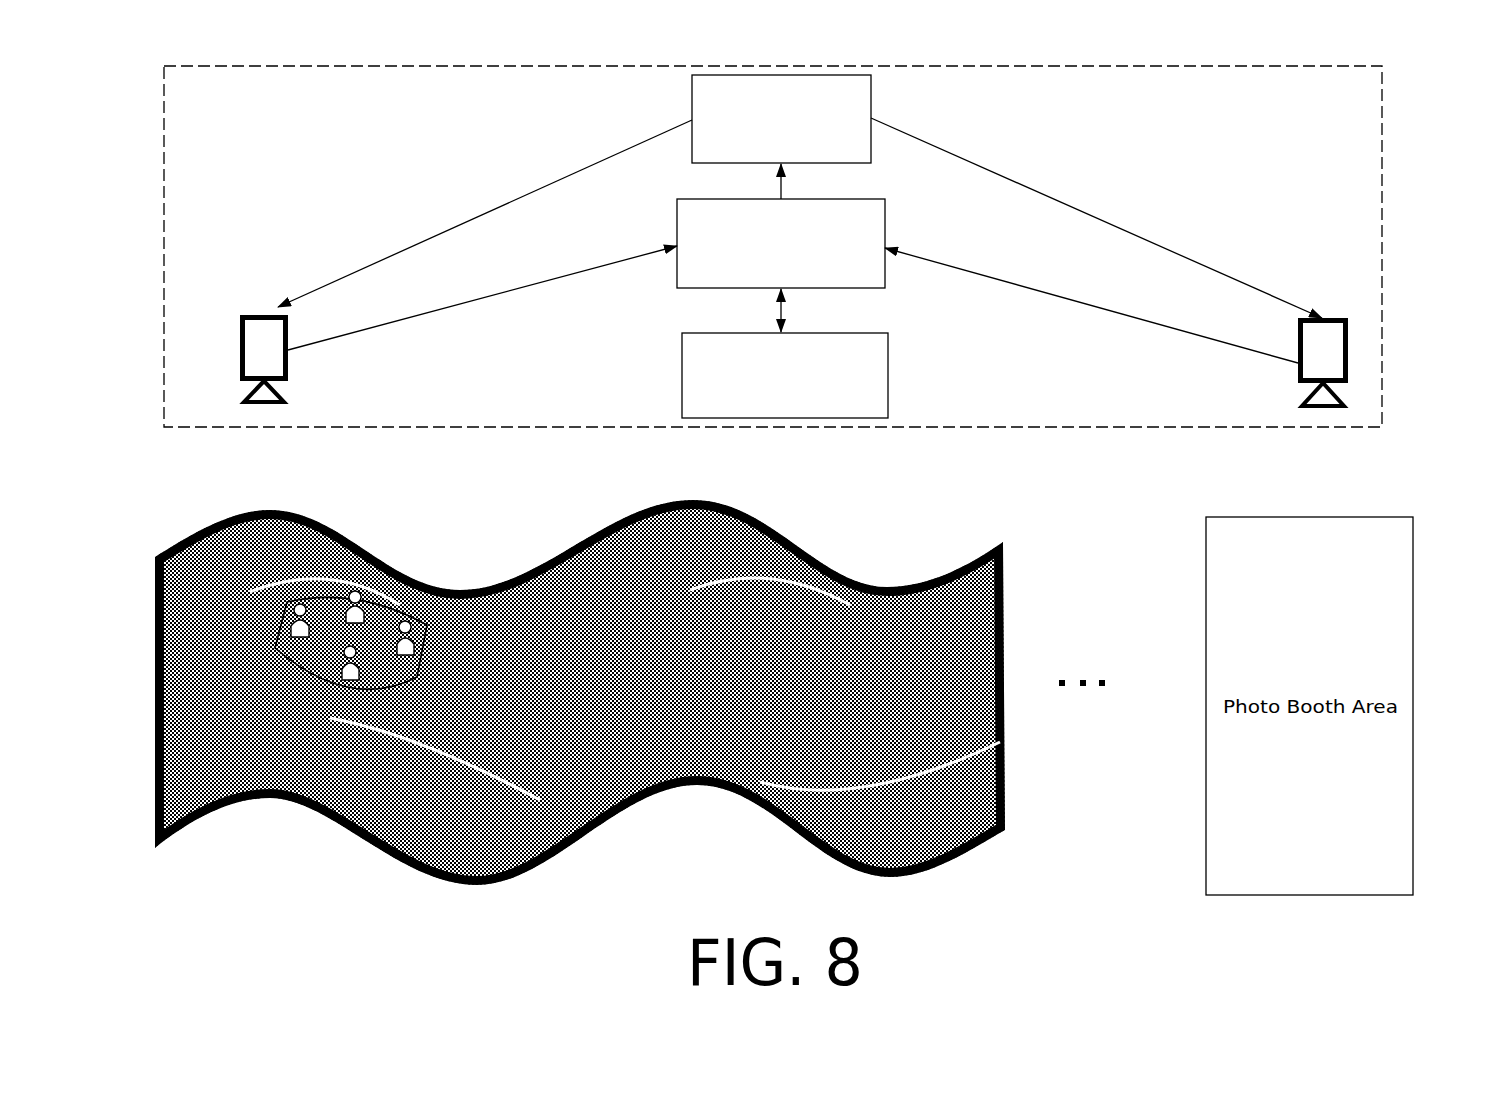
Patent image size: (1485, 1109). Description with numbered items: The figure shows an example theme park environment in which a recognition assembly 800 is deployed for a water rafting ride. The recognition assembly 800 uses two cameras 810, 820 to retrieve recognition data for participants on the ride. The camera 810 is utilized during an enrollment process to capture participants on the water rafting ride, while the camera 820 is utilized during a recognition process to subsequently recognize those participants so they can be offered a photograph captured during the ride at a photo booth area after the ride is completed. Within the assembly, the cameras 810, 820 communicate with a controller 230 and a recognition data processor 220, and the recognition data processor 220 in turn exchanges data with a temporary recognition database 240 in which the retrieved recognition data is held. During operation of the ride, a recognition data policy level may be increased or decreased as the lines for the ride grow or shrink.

The recognition assembly 800 is at (773, 246).
The camera 810 is at (240, 328).
The camera 820 is at (1333, 318).
The controller 230 is at (852, 130).
The recognition data processor 220 is at (852, 266).
The temporary recognition database 240 is at (853, 412).